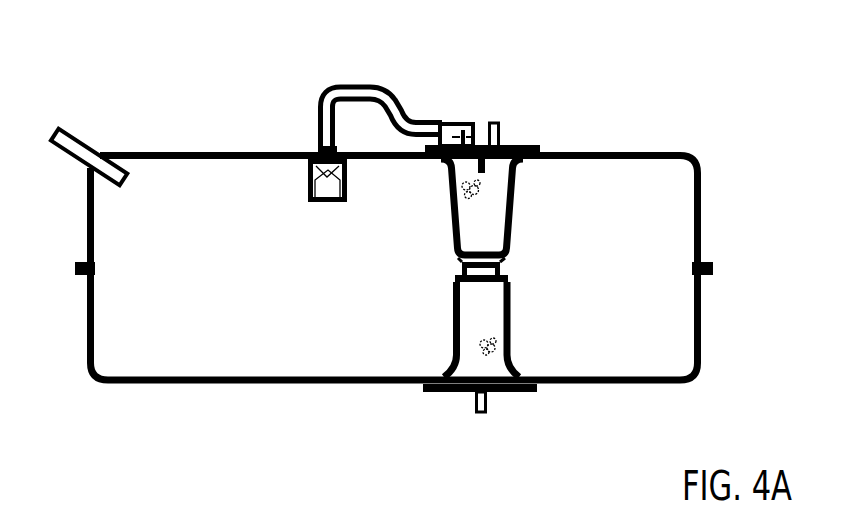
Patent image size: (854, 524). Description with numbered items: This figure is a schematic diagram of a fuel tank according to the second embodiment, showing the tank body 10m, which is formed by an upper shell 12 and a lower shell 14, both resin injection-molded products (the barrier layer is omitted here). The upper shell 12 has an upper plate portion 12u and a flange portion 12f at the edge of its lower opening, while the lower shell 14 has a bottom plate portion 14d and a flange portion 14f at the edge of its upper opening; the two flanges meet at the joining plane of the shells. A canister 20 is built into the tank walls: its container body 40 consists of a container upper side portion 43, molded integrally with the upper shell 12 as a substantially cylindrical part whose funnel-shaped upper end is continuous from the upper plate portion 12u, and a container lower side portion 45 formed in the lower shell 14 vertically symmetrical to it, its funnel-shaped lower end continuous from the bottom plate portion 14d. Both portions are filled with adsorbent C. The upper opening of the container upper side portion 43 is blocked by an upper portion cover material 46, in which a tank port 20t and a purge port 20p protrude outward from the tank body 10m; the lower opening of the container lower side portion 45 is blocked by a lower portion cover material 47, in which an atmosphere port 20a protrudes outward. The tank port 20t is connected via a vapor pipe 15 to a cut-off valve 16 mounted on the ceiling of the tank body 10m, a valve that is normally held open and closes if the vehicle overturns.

The tank body 10m is at (422, 253).
The upper shell 12 is at (418, 168).
The upper plate portion 12u is at (580, 150).
The flange portion 12f is at (703, 260).
The lower shell 14 is at (422, 354).
The bottom plate portion 14d is at (590, 388).
The flange portion 14f is at (703, 277).
The vapor pipe 15 is at (352, 84).
The cut-off valve 16 is at (325, 190).
The canister 20 is at (477, 268).
The tank port 20t is at (462, 122).
The purge port 20p is at (497, 120).
The atmosphere port 20a is at (481, 414).
The container body 40 is at (452, 283).
The container upper side portion 43 is at (519, 216).
The container lower side portion 45 is at (516, 345).
The upper portion cover material 46 is at (512, 145).
The lower portion cover material 47 is at (460, 392).
The adsorbent C is at (452, 200).